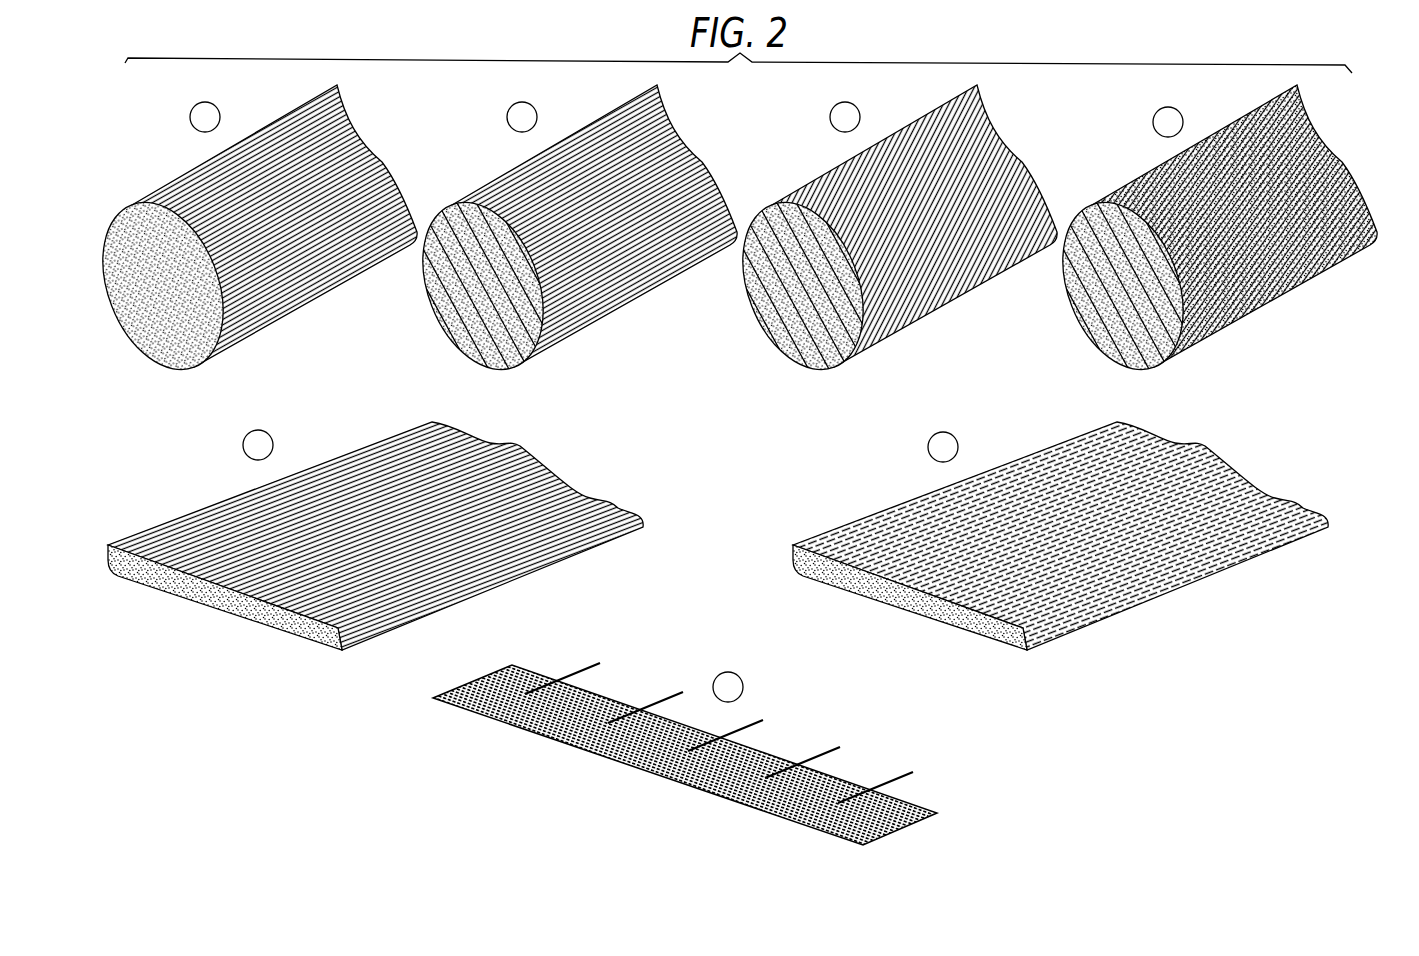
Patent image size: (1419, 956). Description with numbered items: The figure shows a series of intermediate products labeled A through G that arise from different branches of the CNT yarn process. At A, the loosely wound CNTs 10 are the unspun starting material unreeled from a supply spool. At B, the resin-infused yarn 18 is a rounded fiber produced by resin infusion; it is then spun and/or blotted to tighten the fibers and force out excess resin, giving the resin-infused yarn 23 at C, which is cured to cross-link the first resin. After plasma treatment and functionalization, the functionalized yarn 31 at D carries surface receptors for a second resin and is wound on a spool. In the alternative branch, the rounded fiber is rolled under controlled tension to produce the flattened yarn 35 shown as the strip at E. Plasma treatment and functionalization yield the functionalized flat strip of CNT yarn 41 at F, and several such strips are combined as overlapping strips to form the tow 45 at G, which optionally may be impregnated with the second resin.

The loosely wound CNTs 10 is at (337, 150).
The resin-infused yarn 18 is at (657, 150).
The resin-infused yarn 23 is at (980, 153).
The functionalized yarn 31 is at (1302, 155).
The flattened yarn 35 is at (508, 472).
The functionalized flat strip of CNT yarn 41 is at (1193, 472).
The tow 45 is at (762, 748).